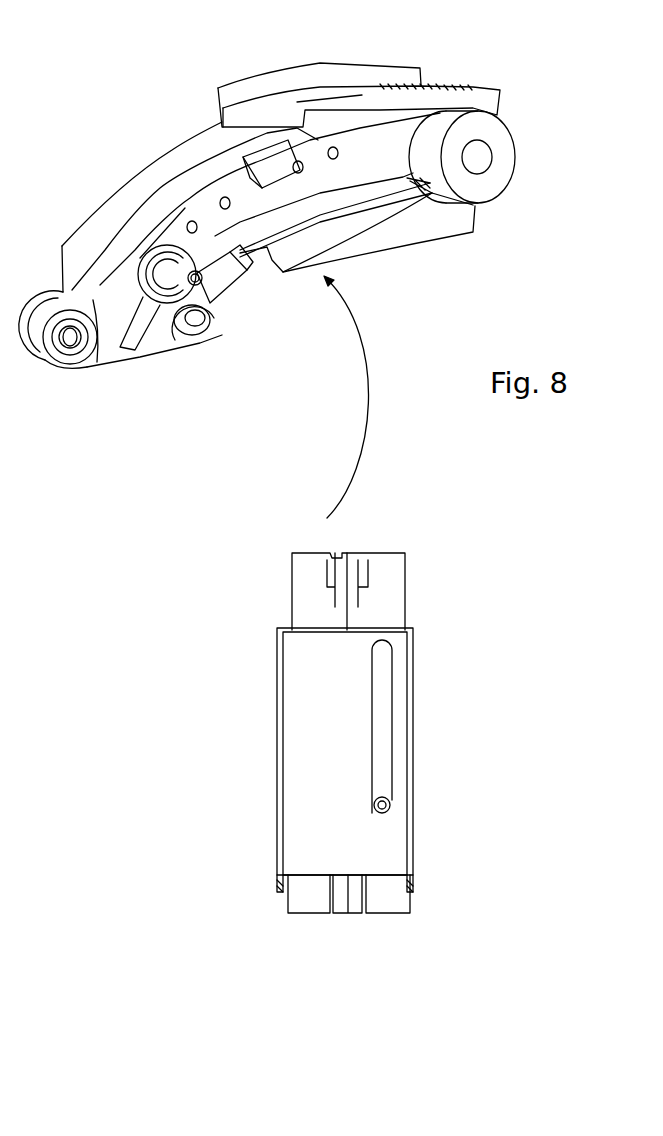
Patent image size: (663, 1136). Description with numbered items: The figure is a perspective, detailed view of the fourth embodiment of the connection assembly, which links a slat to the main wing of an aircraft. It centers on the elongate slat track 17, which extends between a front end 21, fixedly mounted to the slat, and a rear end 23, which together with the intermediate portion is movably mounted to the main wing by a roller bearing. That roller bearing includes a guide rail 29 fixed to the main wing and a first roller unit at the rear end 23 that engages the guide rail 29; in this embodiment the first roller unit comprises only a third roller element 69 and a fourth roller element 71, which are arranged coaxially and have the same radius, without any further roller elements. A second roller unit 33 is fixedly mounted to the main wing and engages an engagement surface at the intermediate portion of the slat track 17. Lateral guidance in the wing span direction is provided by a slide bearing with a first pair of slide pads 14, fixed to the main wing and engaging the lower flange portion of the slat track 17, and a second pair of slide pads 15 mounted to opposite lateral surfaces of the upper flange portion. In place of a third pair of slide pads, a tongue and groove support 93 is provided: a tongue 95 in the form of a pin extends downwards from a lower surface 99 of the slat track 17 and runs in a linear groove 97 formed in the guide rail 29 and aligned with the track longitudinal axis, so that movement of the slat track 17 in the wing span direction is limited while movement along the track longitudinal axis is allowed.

The first pair of slide pads 14 is at (227, 290).
The second pair of slide pads 15 is at (263, 163).
The slat track 17 is at (130, 200).
The front end 21 is at (50, 360).
The rear end 23 is at (502, 120).
The guide rail 29 is at (473, 93).
The second roller unit 33 is at (157, 295).
The third roller element 69 is at (510, 150).
The fourth roller element 71 is at (392, 900).
The tongue and groove support 93 is at (442, 243).
The tongue 95 is at (393, 802).
The groove 97 is at (380, 715).
The lower surface 99 is at (387, 200).